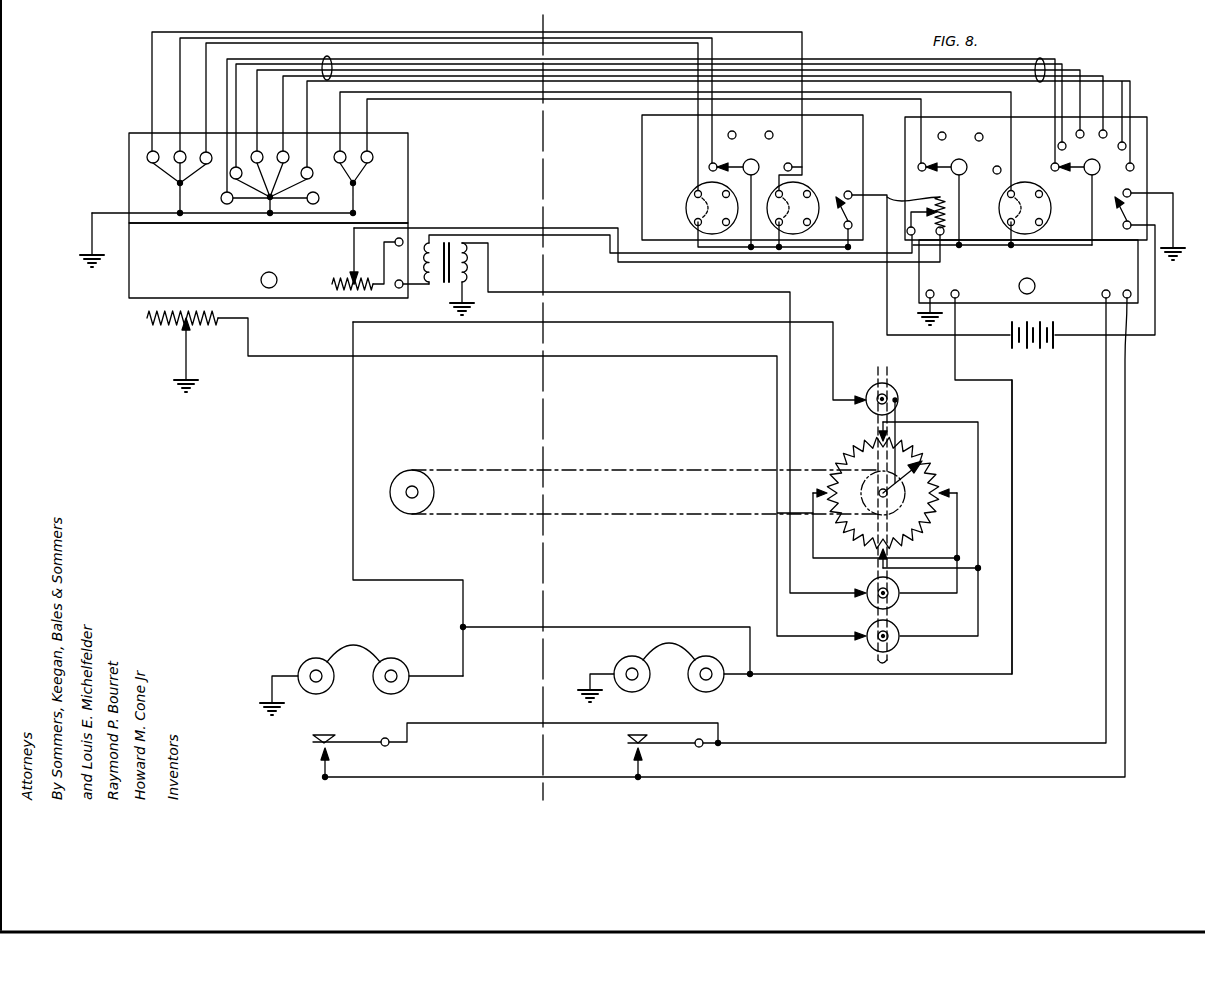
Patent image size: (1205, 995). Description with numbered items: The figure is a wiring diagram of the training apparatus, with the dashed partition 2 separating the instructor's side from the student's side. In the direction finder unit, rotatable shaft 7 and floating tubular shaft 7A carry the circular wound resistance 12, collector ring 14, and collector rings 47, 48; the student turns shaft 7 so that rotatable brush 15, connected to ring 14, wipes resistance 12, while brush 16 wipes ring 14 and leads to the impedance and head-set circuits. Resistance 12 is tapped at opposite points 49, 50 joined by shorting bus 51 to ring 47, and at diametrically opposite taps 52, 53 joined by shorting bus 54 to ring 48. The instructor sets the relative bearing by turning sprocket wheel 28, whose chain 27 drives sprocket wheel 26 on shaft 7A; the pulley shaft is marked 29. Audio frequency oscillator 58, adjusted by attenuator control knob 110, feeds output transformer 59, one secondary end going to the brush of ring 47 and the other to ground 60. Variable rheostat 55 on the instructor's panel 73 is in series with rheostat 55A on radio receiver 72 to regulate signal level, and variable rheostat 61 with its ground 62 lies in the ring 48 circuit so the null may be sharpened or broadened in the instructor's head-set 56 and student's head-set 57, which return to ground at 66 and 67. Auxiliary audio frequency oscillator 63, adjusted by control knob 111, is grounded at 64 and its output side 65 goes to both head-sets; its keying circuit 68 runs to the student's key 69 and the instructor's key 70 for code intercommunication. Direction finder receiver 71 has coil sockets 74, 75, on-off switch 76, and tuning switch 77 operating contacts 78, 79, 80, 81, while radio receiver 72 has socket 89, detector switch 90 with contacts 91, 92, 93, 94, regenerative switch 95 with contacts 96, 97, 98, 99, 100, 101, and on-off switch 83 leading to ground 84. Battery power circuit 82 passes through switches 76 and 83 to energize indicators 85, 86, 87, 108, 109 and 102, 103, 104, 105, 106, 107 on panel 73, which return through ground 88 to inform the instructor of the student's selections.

The partition 2 is at (543, 192).
The rotatable shaft 7 is at (884, 370).
The tubular shaft 7A is at (890, 613).
The circular wound resistance member 12 is at (912, 454).
The collector ring 14 is at (896, 388).
The rotatable brush 15 is at (920, 468).
The brush 16 is at (852, 390).
The sprocket wheel 26 is at (866, 493).
The chain 27 is at (487, 516).
The sprocket wheel 28 is at (436, 492).
The pulley shaft 29 is at (412, 486).
The collector ring 47 is at (898, 584).
The collector ring 48 is at (899, 630).
The tap 49 is at (822, 493).
The tap 50 is at (945, 492).
The shorting bus 51 is at (813, 558).
The tap 52 is at (880, 436).
The tap 53 is at (888, 548).
The shorting bus 54 is at (978, 538).
The variable rheostat 55 is at (346, 298).
The variable rheostat 55A is at (920, 195).
The instructor's head-set 56 is at (306, 656).
The student's head-set 57 is at (620, 658).
The audio frequency oscillator 58 is at (138, 280).
The audio frequency output transformer 59 is at (442, 288).
The ground 60 is at (478, 310).
The variable rheostat 61 is at (162, 334).
The ground 62 is at (198, 390).
The auxiliary audio frequency oscillator 63 is at (919, 272).
The ground 64 is at (915, 318).
The output side 65 is at (1012, 405).
The ground connection 66 is at (260, 712).
The ground connection 67 is at (584, 700).
The keying circuit 68 is at (1125, 360).
The student's key 69 is at (676, 748).
The instructor's key 70 is at (348, 742).
The radio direction finder receiver 71 is at (645, 182).
The radio receiver 72 is at (905, 134).
The instructor's panel 73 is at (397, 178).
The coil support 74 is at (686, 212).
The coil support 75 is at (818, 192).
The on and off switch 76 is at (854, 218).
The switch 77 is at (755, 150).
The contact 78 is at (709, 167).
The contact 79 is at (736, 125).
The contact 80 is at (772, 131).
The contact 81 is at (802, 167).
The battery power circuit 82 is at (1040, 352).
The on and off switch 83 is at (1134, 210).
The ground 84 is at (1170, 268).
The indicator 85 is at (148, 148).
The indicator 86 is at (177, 148).
The indicator 87 is at (203, 148).
The ground return path 88 is at (86, 255).
The socket 89 is at (1052, 212).
The adjustable switch 90 is at (952, 176).
The contact 91 is at (918, 167).
The contact 92 is at (942, 132).
The contact 93 is at (980, 133).
The contact 94 is at (998, 166).
The switch 95 is at (1100, 172).
The contact 96 is at (1051, 167).
The contact 97 is at (1058, 146).
The contact 98 is at (1078, 138).
The contact 99 is at (1101, 138).
The contact 100 is at (1126, 146).
The contact 101 is at (1134, 165).
The indicator 102 is at (221, 198).
The indicator 103 is at (223, 177).
The indicator 104 is at (265, 146).
The indicator 105 is at (277, 160).
The indicator 106 is at (313, 173).
The indicator 107 is at (319, 198).
The indicator 108 is at (343, 147).
The indicator 109 is at (371, 148).
The attenuator control knob 110 is at (261, 283).
The control knob 111 is at (1035, 288).